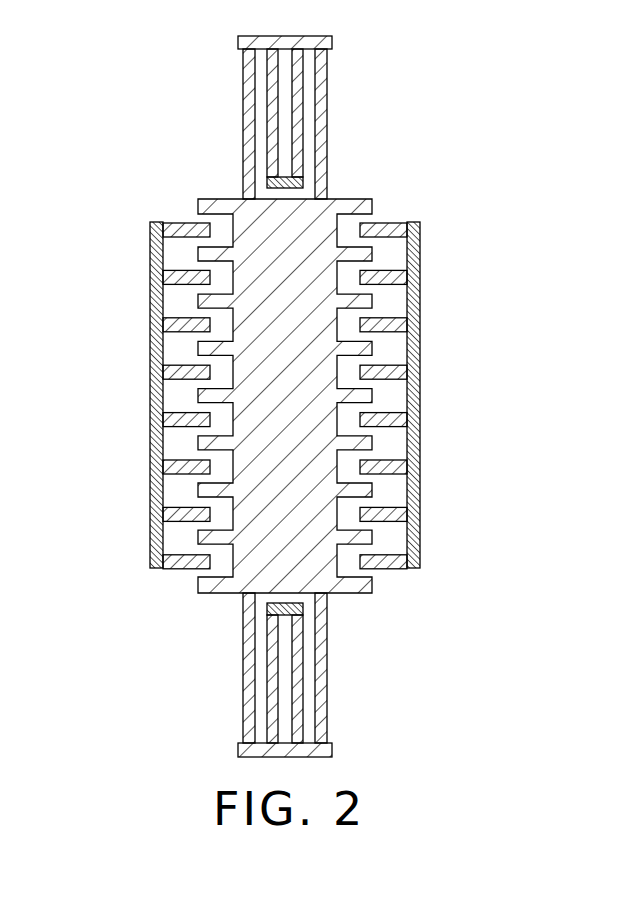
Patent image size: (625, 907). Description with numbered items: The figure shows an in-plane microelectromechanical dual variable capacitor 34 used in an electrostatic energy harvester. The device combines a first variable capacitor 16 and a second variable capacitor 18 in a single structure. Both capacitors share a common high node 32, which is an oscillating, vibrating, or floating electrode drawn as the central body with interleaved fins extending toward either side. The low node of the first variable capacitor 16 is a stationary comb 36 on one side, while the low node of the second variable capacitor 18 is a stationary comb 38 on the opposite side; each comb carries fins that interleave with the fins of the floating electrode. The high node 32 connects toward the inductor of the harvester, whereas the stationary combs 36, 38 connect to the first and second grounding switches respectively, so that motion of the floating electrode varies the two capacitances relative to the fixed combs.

The first variable capacitor 16 is at (158, 186).
The second variable capacitor 18 is at (409, 190).
The high node 32 is at (300, 355).
The in-plane MEM dual variable capacitor 34 is at (432, 106).
The stationary comb 36 is at (150, 292).
The stationary comb 38 is at (420, 490).